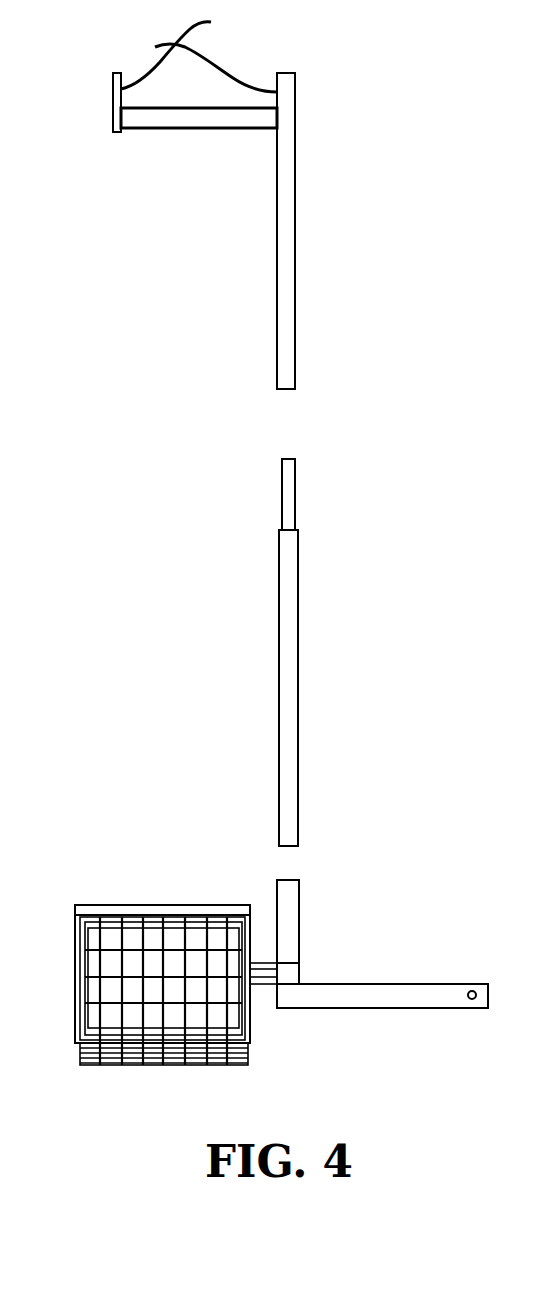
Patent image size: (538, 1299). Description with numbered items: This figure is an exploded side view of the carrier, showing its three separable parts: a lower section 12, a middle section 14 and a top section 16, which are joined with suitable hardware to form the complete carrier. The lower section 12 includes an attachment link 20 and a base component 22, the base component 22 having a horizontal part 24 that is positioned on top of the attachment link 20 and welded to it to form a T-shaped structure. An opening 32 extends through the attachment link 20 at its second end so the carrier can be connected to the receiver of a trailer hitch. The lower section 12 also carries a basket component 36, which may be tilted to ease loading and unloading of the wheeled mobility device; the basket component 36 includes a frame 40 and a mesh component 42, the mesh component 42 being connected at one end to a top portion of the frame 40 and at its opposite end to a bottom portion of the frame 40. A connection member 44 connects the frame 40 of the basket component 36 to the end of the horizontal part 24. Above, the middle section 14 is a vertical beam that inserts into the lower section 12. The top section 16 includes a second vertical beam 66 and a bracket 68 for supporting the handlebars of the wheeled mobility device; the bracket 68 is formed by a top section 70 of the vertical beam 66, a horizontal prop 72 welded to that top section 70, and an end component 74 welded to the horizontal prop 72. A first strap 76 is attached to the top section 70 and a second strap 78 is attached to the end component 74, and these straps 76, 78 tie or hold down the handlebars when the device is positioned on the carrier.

The lower section 12 is at (424, 903).
The middle section 14 is at (243, 690).
The top section 16 is at (182, 257).
The attachment link 20 is at (365, 1008).
The base component 22 is at (320, 898).
The horizontal part 24 is at (300, 974).
The opening 32 is at (473, 989).
The basket component 36 is at (80, 885).
The frame 40 is at (200, 912).
The mesh component 42 is at (157, 1065).
The connection member 44 is at (263, 963).
The second vertical beam 66 is at (297, 306).
The bracket 68 is at (173, 143).
The top section of the vertical beam 70 is at (297, 86).
The horizontal prop 72 is at (198, 127).
The end component 74 is at (112, 96).
The first strap 76 is at (222, 64).
The second strap 78 is at (155, 70).